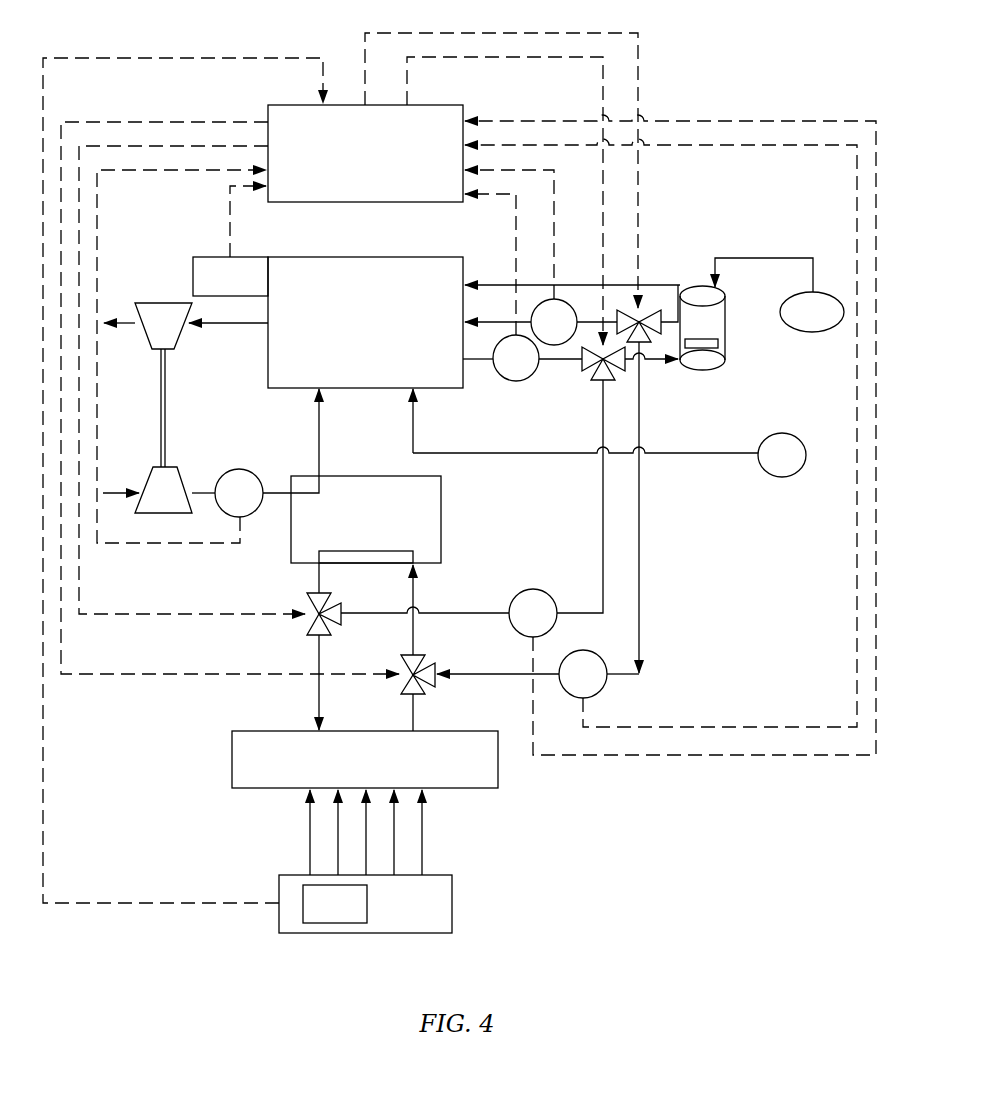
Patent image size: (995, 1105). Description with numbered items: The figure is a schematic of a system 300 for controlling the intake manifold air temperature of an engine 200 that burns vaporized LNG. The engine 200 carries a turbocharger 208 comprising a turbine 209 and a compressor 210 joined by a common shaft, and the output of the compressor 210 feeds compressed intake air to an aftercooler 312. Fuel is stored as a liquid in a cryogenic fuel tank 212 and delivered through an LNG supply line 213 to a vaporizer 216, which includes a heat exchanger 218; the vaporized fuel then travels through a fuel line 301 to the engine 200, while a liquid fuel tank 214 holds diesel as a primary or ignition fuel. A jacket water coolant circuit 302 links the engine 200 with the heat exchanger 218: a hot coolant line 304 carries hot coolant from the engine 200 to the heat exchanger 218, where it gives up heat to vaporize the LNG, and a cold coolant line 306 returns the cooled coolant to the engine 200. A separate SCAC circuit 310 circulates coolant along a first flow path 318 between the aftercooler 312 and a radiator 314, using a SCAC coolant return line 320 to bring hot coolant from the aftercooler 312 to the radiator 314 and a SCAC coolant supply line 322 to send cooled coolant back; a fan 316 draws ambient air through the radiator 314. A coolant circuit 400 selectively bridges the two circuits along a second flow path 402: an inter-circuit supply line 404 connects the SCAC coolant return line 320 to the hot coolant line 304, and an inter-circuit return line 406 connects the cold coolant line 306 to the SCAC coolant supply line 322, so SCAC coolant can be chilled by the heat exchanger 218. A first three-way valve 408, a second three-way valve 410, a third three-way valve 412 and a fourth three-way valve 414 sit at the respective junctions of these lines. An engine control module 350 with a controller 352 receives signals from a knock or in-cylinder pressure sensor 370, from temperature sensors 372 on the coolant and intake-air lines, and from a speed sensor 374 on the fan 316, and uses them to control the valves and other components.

The engine 200 is at (350, 334).
The turbocharger 208 is at (186, 406).
The turbine 209 is at (147, 333).
The compressor 210 is at (147, 504).
The cryogenic fuel tank 212 is at (796, 322).
The LNG supply line 213 is at (763, 257).
The liquid fuel tank 214 is at (766, 465).
The vaporizer 216 is at (697, 284).
The heat exchanger 218 is at (723, 345).
The system 300 is at (753, 97).
The fuel line 301 is at (585, 283).
The jacket water coolant circuit 302 is at (545, 368).
The hot coolant line 304 is at (478, 362).
The cold coolant line 306 is at (668, 306).
The split-flow separate circuit aftercooler (SCAC) circuit 310 is at (297, 653).
The aftercooler 312 is at (350, 529).
The radiator 314 is at (349, 772).
The fan 316 is at (391, 917).
The first flow path 318 is at (393, 692).
The SCAC coolant return line 320 is at (318, 698).
The SCAC coolant supply line 322 is at (415, 590).
The engine control module (ECM) 350 is at (365, 153).
The controller 352 is at (333, 164).
The sensor 370 is at (214, 292).
The temperature sensor 372 is at (223, 503).
The speed sensor 374 is at (319, 917).
The coolant circuit 400 is at (508, 687).
The second flow path 402 is at (477, 620).
The inter-circuit supply line 404 is at (600, 497).
The inter-circuit return line 406 is at (641, 541).
The first three-way valve 408 is at (313, 603).
The second three-way valve 410 is at (436, 686).
The third three-way valve 412 is at (598, 381).
The fourth three-way valve 414 is at (643, 343).